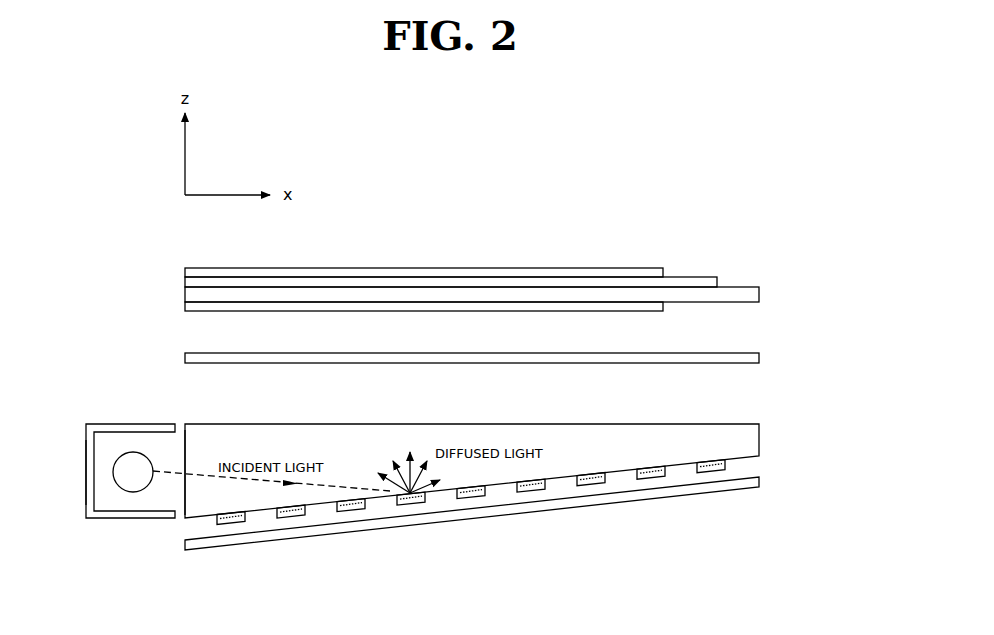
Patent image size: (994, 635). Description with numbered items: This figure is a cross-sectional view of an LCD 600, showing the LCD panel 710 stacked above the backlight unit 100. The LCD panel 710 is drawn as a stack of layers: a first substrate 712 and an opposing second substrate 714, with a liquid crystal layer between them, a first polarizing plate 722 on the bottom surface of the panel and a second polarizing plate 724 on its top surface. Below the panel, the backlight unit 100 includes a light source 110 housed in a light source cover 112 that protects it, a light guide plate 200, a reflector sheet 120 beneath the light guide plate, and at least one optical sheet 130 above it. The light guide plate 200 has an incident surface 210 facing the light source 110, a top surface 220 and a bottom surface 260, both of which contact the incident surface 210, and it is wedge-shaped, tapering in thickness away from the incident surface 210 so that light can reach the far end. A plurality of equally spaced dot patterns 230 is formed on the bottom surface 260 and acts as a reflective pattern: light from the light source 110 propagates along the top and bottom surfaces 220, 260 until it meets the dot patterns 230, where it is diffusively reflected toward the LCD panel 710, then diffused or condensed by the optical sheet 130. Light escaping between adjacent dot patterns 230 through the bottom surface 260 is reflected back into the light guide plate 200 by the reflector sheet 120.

The backlight unit 100 is at (850, 352).
The light source 110 is at (133, 478).
The light source cover 112 is at (85, 503).
The reflector sheet 120 is at (759, 477).
The optical sheet 130 is at (759, 355).
The light guide plate 200 is at (750, 440).
The incident surface 210 is at (183, 490).
The top surface 220 is at (200, 424).
The dot patterns 230 is at (471, 525).
The bottom surface 260 is at (443, 497).
The LCD 600 is at (706, 229).
The LCD panel 710 is at (93, 252).
The first substrate 712 is at (190, 282).
The second substrate 714 is at (190, 293).
The first polarizing plate 722 is at (190, 306).
The second polarizing plate 724 is at (190, 272).